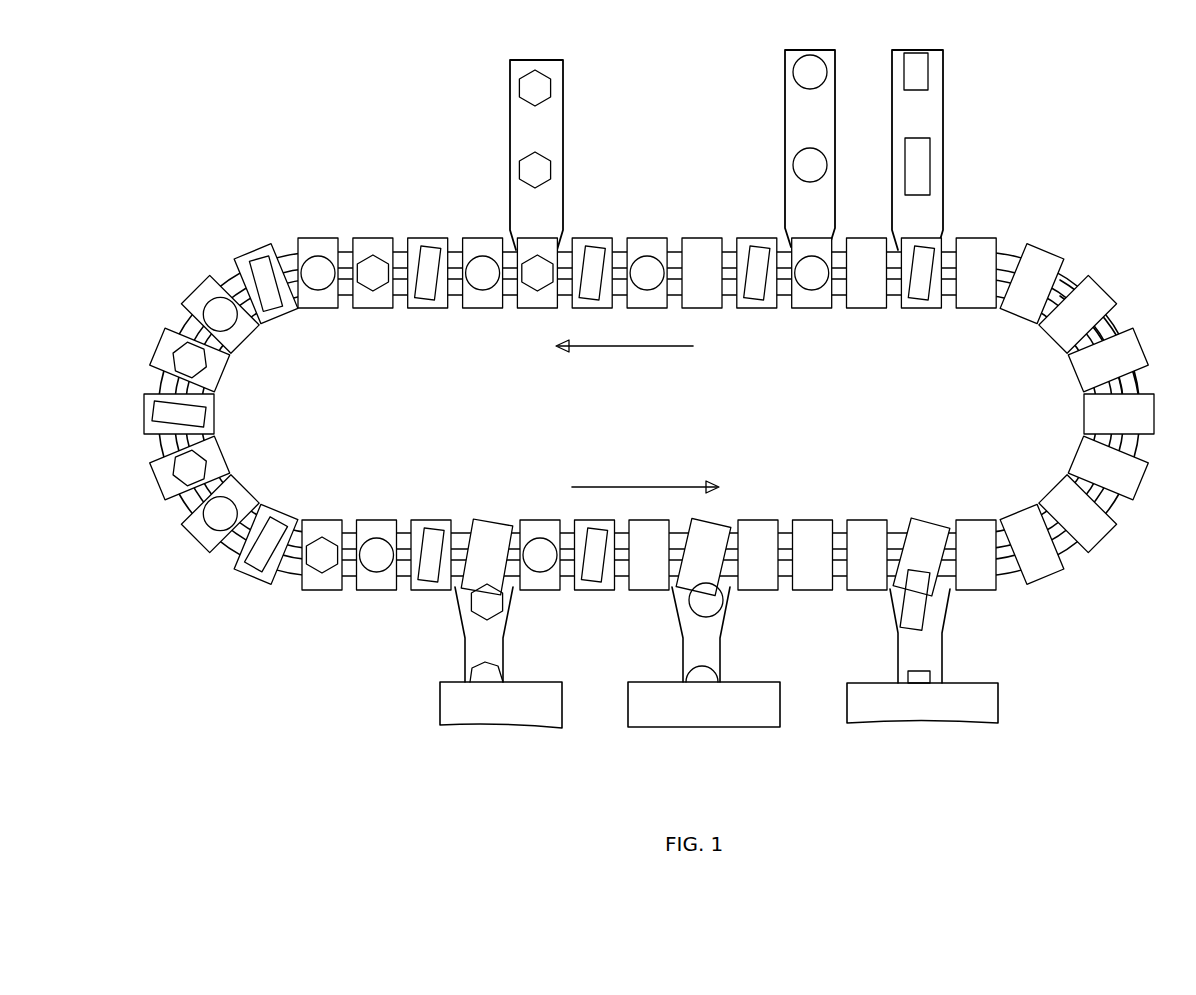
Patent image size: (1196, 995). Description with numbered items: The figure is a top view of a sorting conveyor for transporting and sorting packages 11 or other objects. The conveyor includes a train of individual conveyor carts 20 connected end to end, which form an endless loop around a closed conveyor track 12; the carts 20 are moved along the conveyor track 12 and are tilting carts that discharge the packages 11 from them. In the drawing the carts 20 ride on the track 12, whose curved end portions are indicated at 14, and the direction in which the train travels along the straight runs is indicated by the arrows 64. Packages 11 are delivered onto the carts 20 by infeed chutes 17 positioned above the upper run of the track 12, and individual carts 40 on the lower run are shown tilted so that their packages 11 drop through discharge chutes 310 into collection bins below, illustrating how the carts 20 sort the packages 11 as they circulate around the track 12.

The packages 11 is at (376, 268).
The conveyor track 12 is at (666, 384).
The track guide 14 is at (1102, 327).
The infeed chute 17 is at (564, 145).
The conveyor carts 20 is at (649, 450).
The carrier 40 is at (317, 525).
The direction of travel 64 is at (628, 349).
The discharge chute 310 is at (507, 668).